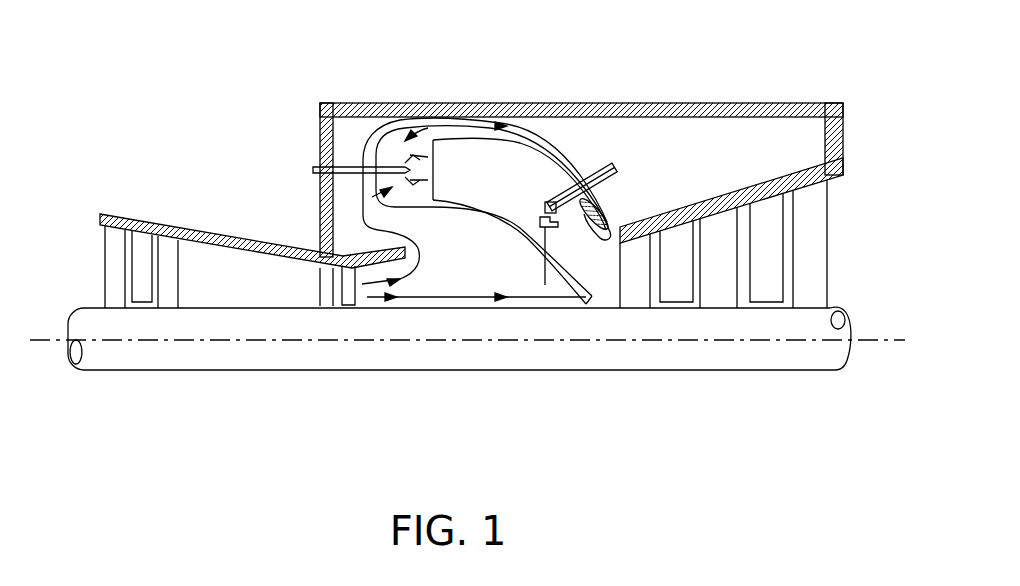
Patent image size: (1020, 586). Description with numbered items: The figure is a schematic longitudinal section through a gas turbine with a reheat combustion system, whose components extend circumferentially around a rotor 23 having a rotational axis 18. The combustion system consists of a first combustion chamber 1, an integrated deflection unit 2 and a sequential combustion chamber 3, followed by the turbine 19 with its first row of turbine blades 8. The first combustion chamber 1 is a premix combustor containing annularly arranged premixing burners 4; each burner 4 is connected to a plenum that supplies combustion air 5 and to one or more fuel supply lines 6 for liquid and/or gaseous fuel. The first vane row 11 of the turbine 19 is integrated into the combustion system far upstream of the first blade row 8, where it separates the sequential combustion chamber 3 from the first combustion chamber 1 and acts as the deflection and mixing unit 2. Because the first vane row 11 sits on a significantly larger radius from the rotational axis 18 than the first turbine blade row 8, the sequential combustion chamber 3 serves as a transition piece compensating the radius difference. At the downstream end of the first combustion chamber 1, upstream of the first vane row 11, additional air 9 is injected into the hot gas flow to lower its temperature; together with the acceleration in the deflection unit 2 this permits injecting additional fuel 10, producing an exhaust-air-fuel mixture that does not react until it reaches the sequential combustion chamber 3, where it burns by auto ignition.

The first combustion chamber 1 is at (473, 187).
The integrated deflection unit 2 is at (543, 228).
The sequential combustion chamber 3 is at (605, 257).
The premixing burner 4 is at (406, 160).
The combustion air 5 is at (413, 182).
The fuel supply line 6 is at (313, 168).
The first row of turbine blades 8 is at (638, 260).
The additional air 9 is at (592, 160).
The additional fuel 10 is at (615, 200).
The first vane row 11 is at (540, 218).
The rotational axis 18 is at (157, 343).
The turbine 19 is at (620, 383).
The rotor 23 is at (204, 355).